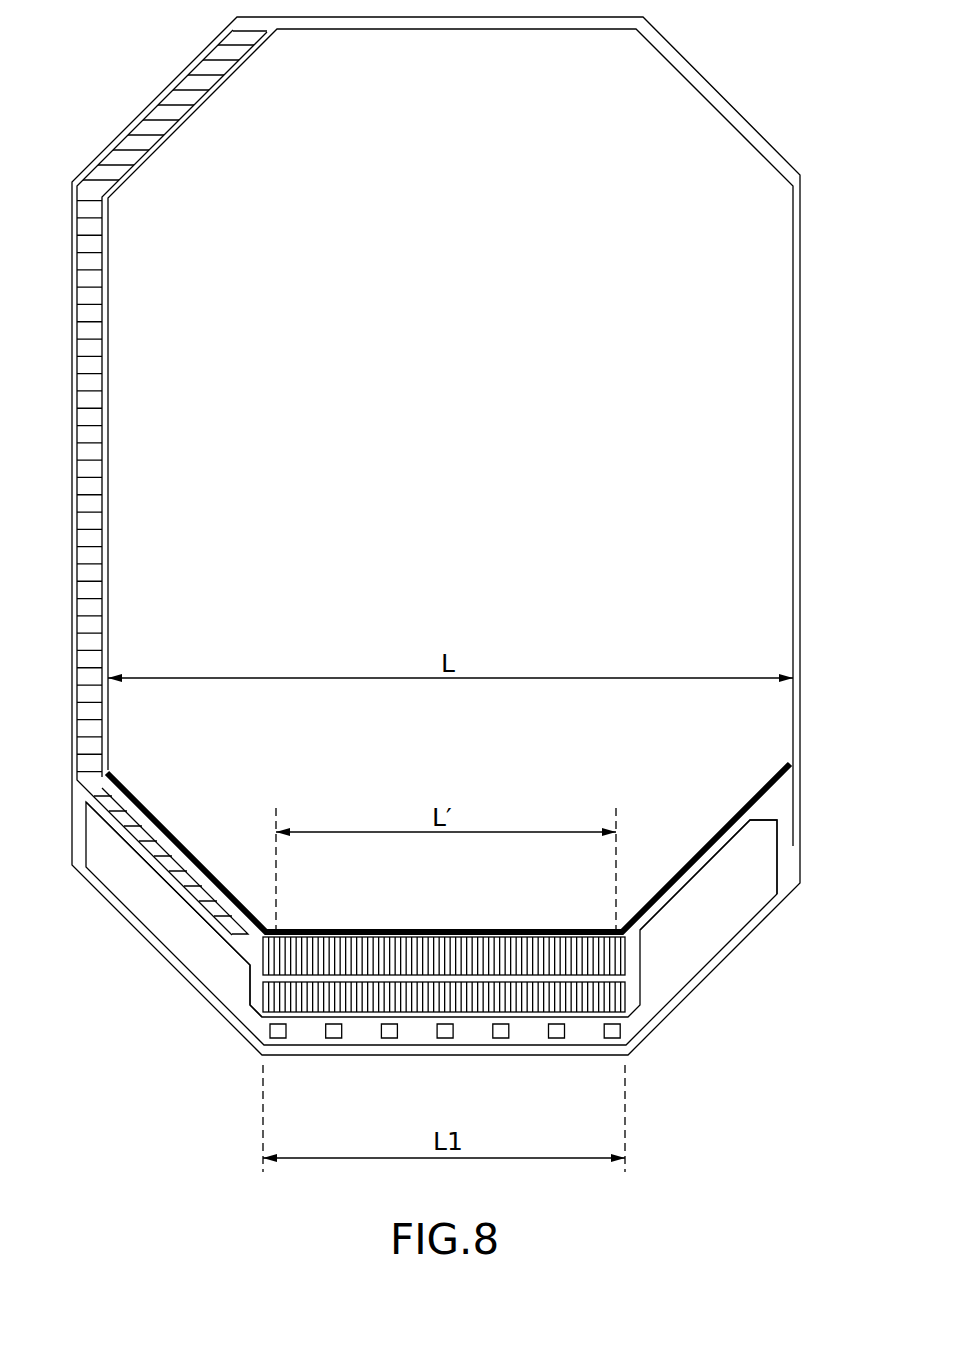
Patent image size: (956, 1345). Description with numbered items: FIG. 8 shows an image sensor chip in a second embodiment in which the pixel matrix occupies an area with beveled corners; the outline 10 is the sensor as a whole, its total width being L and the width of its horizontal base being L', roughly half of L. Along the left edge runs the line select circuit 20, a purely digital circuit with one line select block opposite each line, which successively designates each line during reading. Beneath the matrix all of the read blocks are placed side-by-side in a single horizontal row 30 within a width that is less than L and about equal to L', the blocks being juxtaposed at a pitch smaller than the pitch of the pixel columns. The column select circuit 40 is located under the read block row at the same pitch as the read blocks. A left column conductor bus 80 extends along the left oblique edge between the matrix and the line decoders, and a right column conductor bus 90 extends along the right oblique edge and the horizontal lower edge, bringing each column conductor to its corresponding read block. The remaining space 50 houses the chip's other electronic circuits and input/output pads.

The substrate / tape carrier 10 is at (742, 436).
The line select circuit 20 is at (90, 453).
The read circuit 30 is at (445, 955).
The column select circuit 40 is at (434, 1005).
The space for electronic circuits and input/output pads 50 is at (672, 968).
The column conductor bus 80 is at (195, 848).
The column conductor bus 90 is at (709, 825).